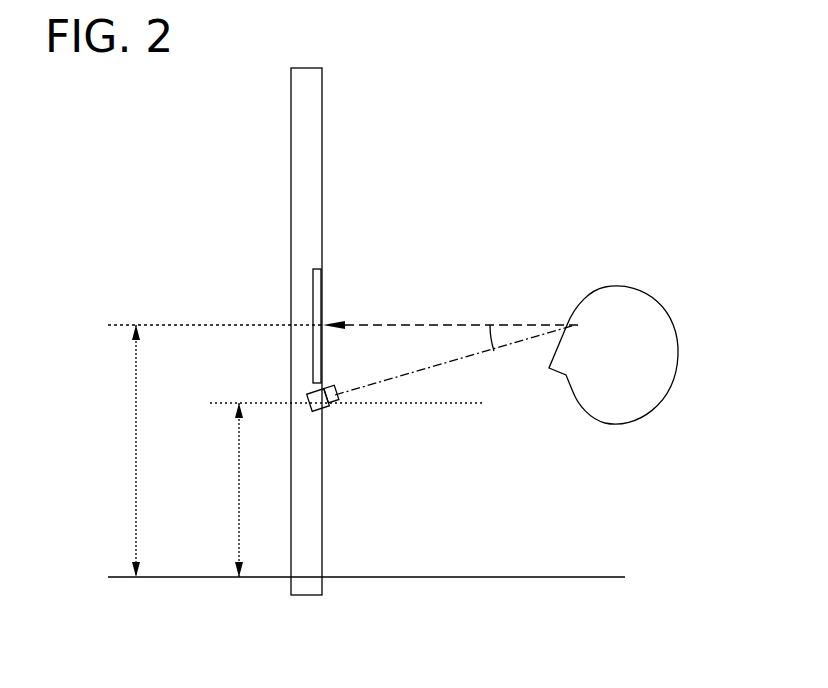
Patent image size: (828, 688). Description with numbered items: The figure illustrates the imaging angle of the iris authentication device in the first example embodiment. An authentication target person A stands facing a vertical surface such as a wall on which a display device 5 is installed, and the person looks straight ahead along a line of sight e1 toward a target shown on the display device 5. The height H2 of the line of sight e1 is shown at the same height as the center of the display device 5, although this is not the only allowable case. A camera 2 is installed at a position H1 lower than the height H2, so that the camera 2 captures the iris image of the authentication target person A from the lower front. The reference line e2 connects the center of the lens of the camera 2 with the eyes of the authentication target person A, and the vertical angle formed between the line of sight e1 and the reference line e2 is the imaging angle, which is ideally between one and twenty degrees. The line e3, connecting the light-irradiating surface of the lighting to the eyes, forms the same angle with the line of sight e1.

The camera 2 is at (322, 417).
The display device 5 is at (322, 294).
The authentication target person A is at (650, 297).
The line of sight e1 is at (440, 322).
The reference line e2 is at (455, 383).
The line connecting the lighting and the eyes e3 is at (478, 366).
The camera installation height H1 is at (346, 490).
The height of the line of sight H2 is at (123, 451).